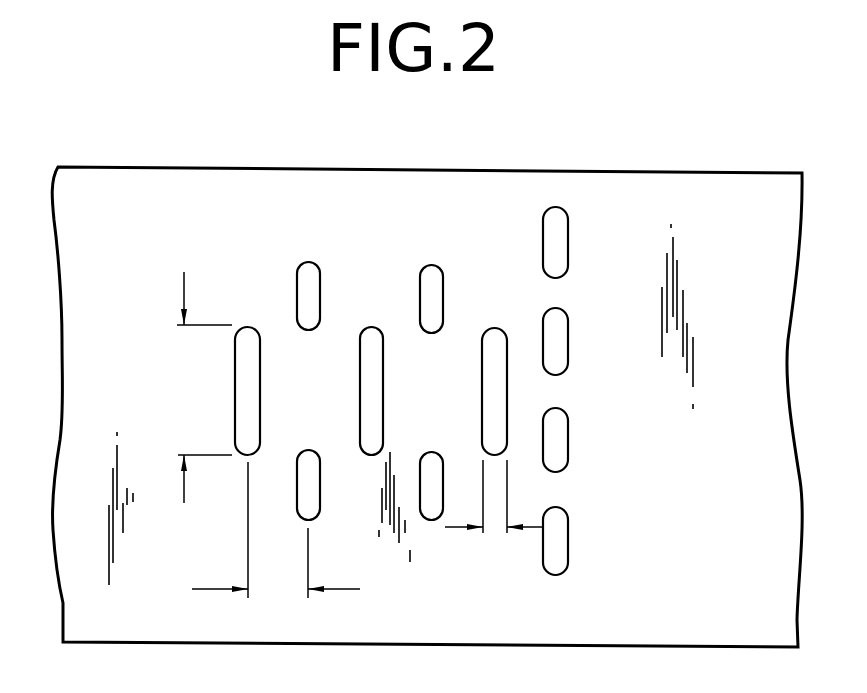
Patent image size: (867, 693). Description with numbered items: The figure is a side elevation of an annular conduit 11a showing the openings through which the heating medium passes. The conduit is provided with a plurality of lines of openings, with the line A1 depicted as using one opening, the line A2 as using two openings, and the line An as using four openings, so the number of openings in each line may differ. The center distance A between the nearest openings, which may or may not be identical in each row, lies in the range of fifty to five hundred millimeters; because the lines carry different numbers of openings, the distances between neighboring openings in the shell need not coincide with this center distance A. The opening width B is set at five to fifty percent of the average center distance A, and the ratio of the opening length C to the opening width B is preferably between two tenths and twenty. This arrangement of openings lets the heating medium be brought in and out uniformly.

The annular conduit 11a is at (625, 188).
The line of openings A1 is at (242, 314).
The line of openings A2 is at (357, 347).
The line of openings An is at (552, 374).
The center distance A is at (276, 530).
The opening width B is at (493, 501).
The opening length C is at (204, 387).